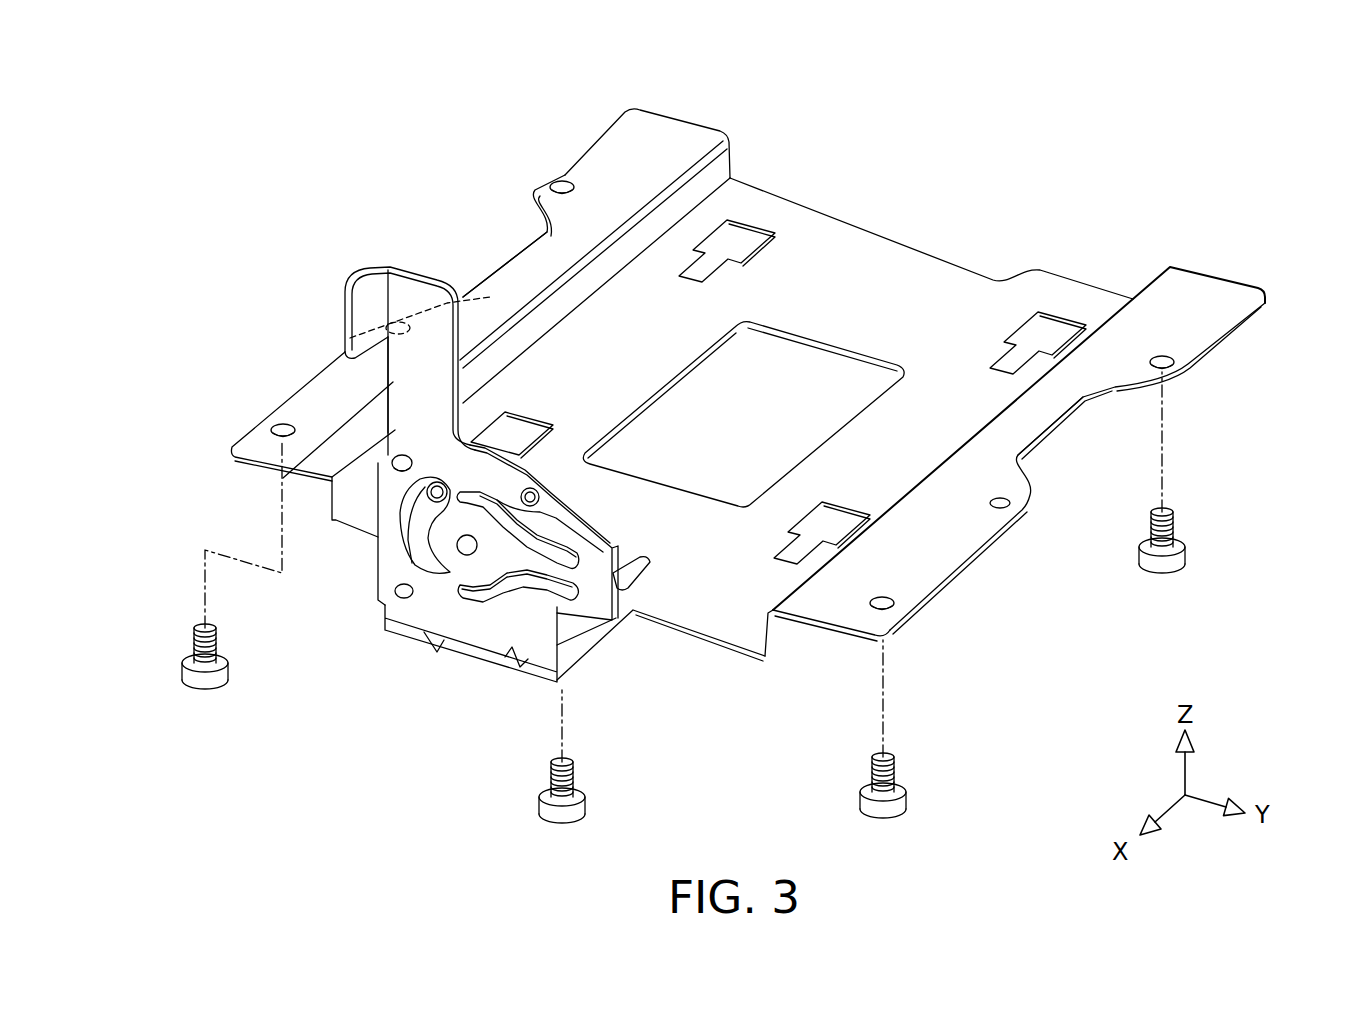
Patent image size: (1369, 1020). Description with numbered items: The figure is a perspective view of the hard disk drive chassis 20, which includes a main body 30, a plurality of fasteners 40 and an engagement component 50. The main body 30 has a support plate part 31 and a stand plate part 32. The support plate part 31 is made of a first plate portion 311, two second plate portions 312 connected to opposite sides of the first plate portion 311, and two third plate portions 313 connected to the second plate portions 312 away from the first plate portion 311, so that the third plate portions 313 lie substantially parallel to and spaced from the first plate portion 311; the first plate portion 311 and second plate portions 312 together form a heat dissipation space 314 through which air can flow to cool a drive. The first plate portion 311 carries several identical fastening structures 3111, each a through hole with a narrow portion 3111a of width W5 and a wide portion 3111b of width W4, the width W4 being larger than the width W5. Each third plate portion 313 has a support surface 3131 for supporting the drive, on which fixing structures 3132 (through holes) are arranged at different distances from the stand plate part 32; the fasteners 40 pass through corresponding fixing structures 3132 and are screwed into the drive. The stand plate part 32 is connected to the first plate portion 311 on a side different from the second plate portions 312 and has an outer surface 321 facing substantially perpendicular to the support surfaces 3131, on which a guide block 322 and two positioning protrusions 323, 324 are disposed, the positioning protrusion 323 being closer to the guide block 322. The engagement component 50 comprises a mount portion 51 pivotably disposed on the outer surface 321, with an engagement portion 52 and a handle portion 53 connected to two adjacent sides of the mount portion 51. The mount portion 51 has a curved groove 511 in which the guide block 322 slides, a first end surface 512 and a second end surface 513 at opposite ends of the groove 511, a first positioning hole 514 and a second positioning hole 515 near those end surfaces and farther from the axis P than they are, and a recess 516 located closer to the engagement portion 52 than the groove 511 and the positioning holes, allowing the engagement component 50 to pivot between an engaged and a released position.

The hard disk drive chassis 20 is at (326, 56).
The main body 30 is at (735, 451).
The support plate part 31 is at (760, 390).
The first plate portion 311 is at (784, 403).
The fastening structure 3111 is at (763, 353).
The narrow portion 3111a is at (712, 268).
The wide portion 3111b is at (742, 236).
The second plate portion 312 is at (735, 165).
The third plate portion 313 is at (527, 273).
The support surface 3131 is at (622, 150).
The fixing structure 3132 is at (560, 180).
The heat dissipation space 314 is at (735, 595).
The stand plate part 32 is at (452, 512).
The outer surface 321 is at (468, 656).
The guide block 322 is at (428, 494).
The positioning protrusion 323 is at (387, 432).
The positioning protrusion 324 is at (542, 497).
The fastener 40 is at (183, 676).
The engagement component 50 is at (439, 523).
The mount portion 51 is at (379, 518).
The groove 511 is at (396, 528).
The first end surface 512 is at (418, 560).
The second end surface 513 is at (424, 486).
The first positioning hole 514 is at (393, 598).
The second positioning hole 515 is at (380, 456).
The recess 516 is at (524, 478).
The engagement portion 52 is at (598, 568).
The handle portion 53 is at (410, 388).
The axis P is at (470, 548).
The width of wide portion W4 is at (670, 267).
The width of narrow portion W5 is at (722, 290).